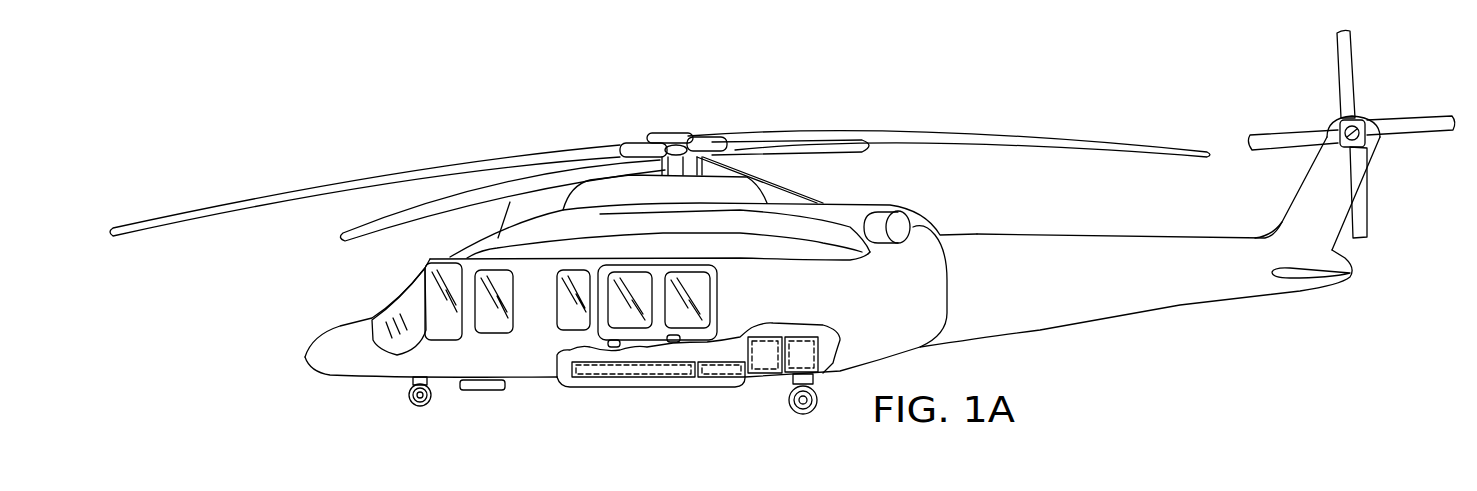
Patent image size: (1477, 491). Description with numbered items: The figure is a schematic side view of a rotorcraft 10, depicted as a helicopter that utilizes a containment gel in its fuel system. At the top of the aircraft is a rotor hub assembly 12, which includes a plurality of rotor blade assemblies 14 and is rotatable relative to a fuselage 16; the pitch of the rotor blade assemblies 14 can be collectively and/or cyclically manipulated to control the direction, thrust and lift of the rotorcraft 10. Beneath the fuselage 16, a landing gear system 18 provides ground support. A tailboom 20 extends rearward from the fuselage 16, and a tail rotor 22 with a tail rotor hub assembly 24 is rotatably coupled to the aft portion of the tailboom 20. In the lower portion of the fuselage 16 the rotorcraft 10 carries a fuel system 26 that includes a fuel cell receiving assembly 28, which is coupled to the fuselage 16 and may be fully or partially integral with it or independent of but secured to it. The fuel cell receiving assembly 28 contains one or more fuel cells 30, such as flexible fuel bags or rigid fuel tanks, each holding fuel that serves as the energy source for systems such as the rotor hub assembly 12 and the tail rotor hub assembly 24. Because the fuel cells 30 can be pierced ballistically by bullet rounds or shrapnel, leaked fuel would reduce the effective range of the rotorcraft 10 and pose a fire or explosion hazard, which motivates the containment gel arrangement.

The rotorcraft 10 is at (376, 96).
The rotor hub assembly 12 is at (667, 131).
The rotor blade assemblies 14 is at (177, 212).
The fuselage 16 is at (345, 378).
The landing gear system 18 is at (418, 408).
The tailboom 20 is at (1081, 237).
The tail rotor 22 is at (1355, 63).
The tail rotor hub assembly 24 is at (1365, 150).
The fuel system 26 is at (587, 387).
The fuel cell receiving assembly 28 is at (720, 358).
The fuel cells 30 is at (765, 348).